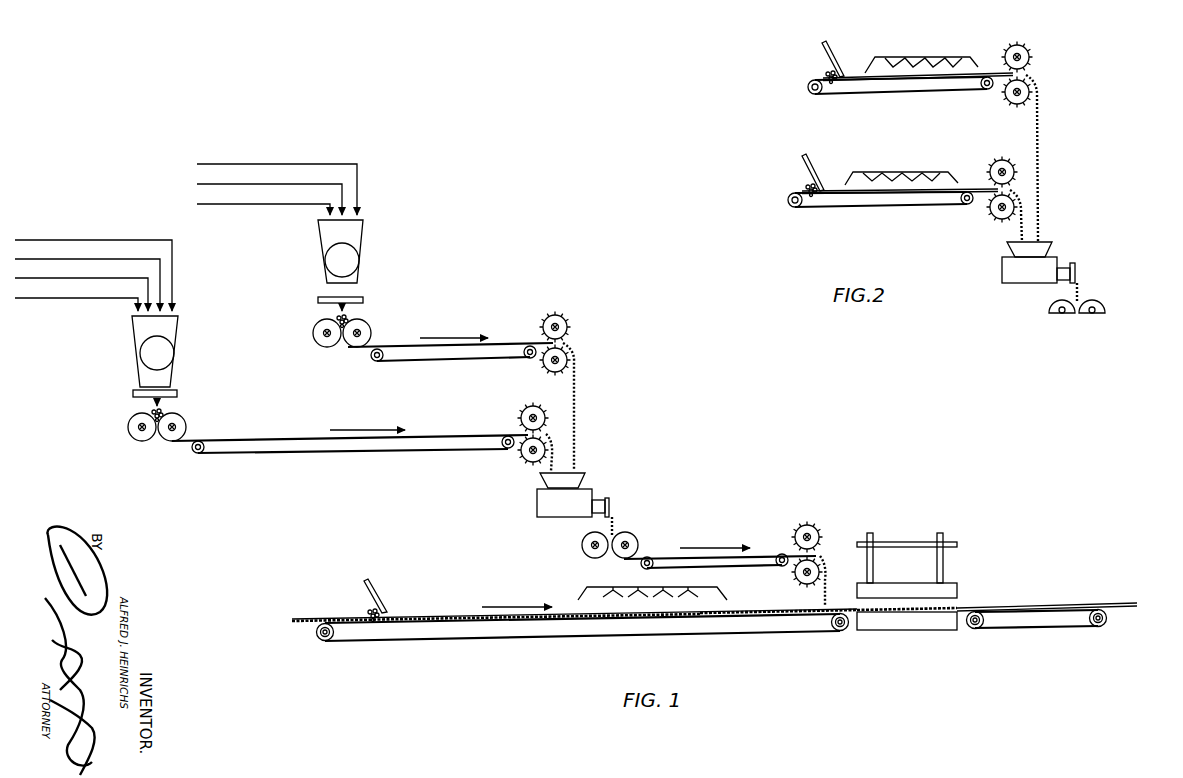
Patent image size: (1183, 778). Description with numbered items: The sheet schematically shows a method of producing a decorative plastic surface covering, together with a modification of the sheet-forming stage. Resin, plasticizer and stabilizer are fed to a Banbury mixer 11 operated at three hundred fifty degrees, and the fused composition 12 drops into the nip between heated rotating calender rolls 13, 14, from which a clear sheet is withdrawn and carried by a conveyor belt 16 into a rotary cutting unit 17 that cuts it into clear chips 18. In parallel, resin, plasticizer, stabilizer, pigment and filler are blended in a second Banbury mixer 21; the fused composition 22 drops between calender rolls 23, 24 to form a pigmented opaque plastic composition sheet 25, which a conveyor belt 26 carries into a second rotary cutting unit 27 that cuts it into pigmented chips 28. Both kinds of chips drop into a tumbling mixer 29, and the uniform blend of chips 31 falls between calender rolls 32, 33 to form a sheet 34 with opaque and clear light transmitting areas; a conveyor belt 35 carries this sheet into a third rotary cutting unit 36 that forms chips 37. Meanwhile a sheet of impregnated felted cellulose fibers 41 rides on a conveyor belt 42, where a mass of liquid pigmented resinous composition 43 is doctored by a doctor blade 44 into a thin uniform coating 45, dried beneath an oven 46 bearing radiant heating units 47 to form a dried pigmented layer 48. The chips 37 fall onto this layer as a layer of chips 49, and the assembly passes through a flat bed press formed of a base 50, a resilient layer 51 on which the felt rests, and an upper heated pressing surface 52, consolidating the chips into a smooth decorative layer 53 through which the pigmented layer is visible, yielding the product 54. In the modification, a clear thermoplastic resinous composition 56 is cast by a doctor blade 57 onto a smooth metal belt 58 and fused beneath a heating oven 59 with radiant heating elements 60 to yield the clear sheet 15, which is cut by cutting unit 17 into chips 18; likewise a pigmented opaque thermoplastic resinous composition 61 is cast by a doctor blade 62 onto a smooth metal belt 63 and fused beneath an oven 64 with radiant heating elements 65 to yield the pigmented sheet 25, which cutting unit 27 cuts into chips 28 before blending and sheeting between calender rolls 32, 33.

In FIG. 1, the Banbury mixer 11 is at (359, 262).
In FIG. 1, the fused composition 12 is at (352, 320).
In FIG. 1, the calender roll 13 is at (315, 330).
In FIG. 1, the calender roll 14 is at (369, 336).
In FIG. 1, the clear fused thermoplastic resinous composition sheet 15 is at (360, 348).
In FIG. 2, the clear fused thermoplastic resinous composition sheet 15 is at (992, 72).
In FIG. 1, the conveyor belt 16 is at (436, 358).
In FIG. 1, the rotary cutting unit 17 is at (581, 333).
In FIG. 2, the rotary cutting unit 17 is at (1041, 69).
In FIG. 1, the chips 18 is at (575, 415).
In FIG. 2, the chips 18 is at (1042, 130).
In FIG. 1, the second Banbury mixer 21 is at (168, 358).
In FIG. 1, the fused composition 22 is at (163, 415).
In FIG. 1, the calender roll 23 is at (130, 429).
In FIG. 1, the calender roll 24 is at (184, 428).
In FIG. 1, the pigmented opaque plastic composition sheet 25 is at (180, 441).
In FIG. 2, the pigmented opaque plastic composition sheet 25 is at (970, 190).
In FIG. 1, the conveyor belt 26 is at (253, 452).
In FIG. 1, the second rotary cutting unit 27 is at (557, 433).
In FIG. 2, the second rotary cutting unit 27 is at (1024, 181).
In FIG. 1, the chips 28 is at (553, 466).
In FIG. 2, the chips 28 is at (1023, 237).
In FIG. 1, the tumbling mixer 29 is at (540, 502).
In FIG. 2, the tumbling mixer 29 is at (1007, 270).
In FIG. 1, the uniform blend of chips 31 is at (615, 528).
In FIG. 2, the uniform blend of chips 31 is at (1079, 291).
In FIG. 1, the calender roll 32 is at (582, 546).
In FIG. 2, the calender roll 32 is at (1050, 311).
In FIG. 1, the calender roll 33 is at (638, 545).
In FIG. 2, the calender roll 33 is at (1104, 313).
In FIG. 1, the sheet 34 is at (628, 560).
In FIG. 1, the conveyor belt 35 is at (743, 567).
In FIG. 1, the third rotary cutting unit 36 is at (833, 536).
In FIG. 1, the chips 37 is at (827, 577).
In FIG. 1, the sheet of impregnated felted cellulose fibers 41 is at (300, 618).
In FIG. 1, the conveyor belt 42 is at (447, 640).
In FIG. 1, the liquid pigmented resinous composition 43 is at (369, 612).
In FIG. 1, the doctor blade 44 is at (385, 603).
In FIG. 1, the coating 45 is at (438, 615).
In FIG. 1, the oven 46 is at (631, 587).
In FIG. 1, the radiant heating units 47 is at (668, 587).
In FIG. 1, the dried pigmented layer 48 is at (753, 607).
In FIG. 1, the layer of chips 49 is at (839, 603).
In FIG. 1, the base 50 is at (943, 623).
In FIG. 1, the resilient layer 51 is at (875, 613).
In FIG. 1, the upper heated pressing surface 52 is at (957, 590).
In FIG. 1, the decorative layer 53 is at (1037, 603).
In FIG. 1, the product 54 is at (1147, 598).
In FIG. 2, the clear thermoplastic resinous composition 56 is at (827, 73).
In FIG. 2, the doctor blade 57 is at (835, 53).
In FIG. 2, the smooth metal belt 58 is at (900, 92).
In FIG. 2, the heating oven 59 is at (900, 53).
In FIG. 2, the radiant heating elements 60 is at (953, 56).
In FIG. 2, the pigmented opaque thermoplastic resinous composition 61 is at (807, 185).
In FIG. 2, the doctor blade 62 is at (815, 170).
In FIG. 2, the smooth metal belt 63 is at (858, 207).
In FIG. 2, the oven 64 is at (883, 170).
In FIG. 2, the radiant heating elements 65 is at (938, 172).